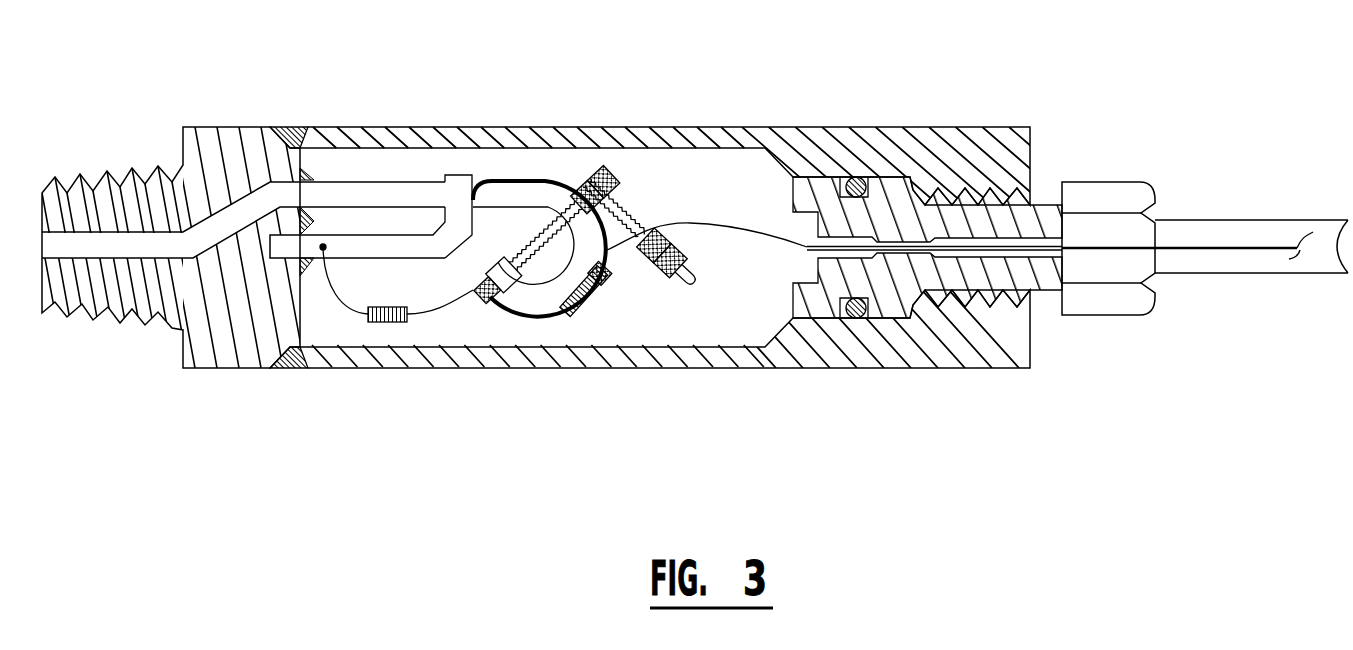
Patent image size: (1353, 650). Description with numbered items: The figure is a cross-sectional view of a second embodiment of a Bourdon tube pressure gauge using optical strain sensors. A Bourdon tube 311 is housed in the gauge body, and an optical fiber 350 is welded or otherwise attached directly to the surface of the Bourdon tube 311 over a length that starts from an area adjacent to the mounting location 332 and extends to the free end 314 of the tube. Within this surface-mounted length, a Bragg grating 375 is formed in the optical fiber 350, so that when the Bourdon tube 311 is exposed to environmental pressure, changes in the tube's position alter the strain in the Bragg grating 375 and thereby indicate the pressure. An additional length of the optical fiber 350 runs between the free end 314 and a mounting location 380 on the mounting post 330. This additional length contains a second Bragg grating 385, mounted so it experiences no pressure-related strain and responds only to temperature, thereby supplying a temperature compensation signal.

The Bourdon tube 311 is at (590, 237).
The free end 314 is at (512, 292).
The mounting post 330 is at (385, 250).
The mounting location 332 is at (462, 195).
The optical fiber 350 is at (745, 230).
The Bragg grating 375 is at (593, 300).
The mounting location 380 is at (323, 247).
The second Bragg grating 385 is at (387, 323).